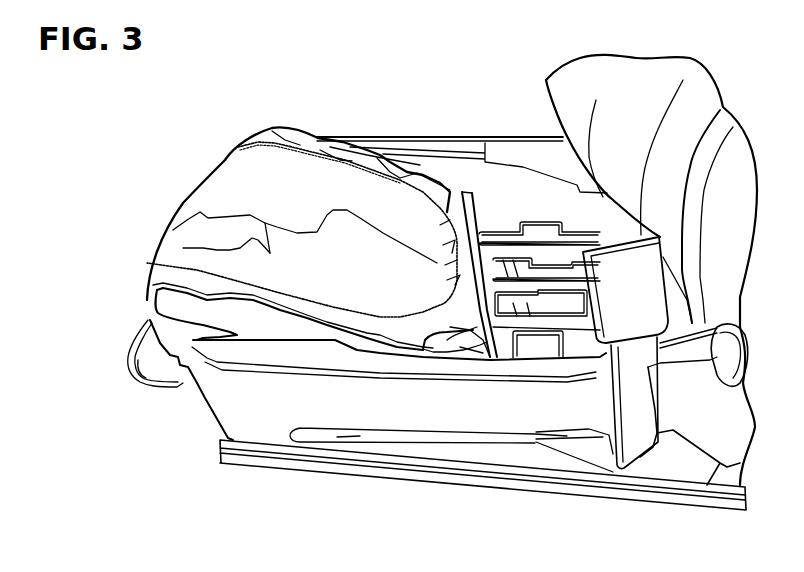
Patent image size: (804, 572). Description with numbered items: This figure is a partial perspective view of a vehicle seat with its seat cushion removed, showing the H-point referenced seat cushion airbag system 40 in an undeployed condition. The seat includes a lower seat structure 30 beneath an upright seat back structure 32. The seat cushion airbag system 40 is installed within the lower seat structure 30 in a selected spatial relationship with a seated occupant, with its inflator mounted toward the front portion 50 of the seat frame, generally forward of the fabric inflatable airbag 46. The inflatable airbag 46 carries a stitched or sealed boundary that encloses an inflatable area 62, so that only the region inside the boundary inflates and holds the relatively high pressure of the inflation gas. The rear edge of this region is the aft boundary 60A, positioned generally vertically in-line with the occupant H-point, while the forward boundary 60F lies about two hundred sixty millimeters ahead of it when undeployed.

The lower seat structure 30 is at (498, 411).
The seat back structure 32 is at (693, 104).
The seat cushion airbag system 40 is at (356, 130).
The inflatable airbag 46 is at (291, 180).
The front portion 50 is at (202, 368).
The aft boundary 60A is at (447, 216).
The forward boundary 60F is at (202, 208).
The inflatable area 62 is at (321, 183).